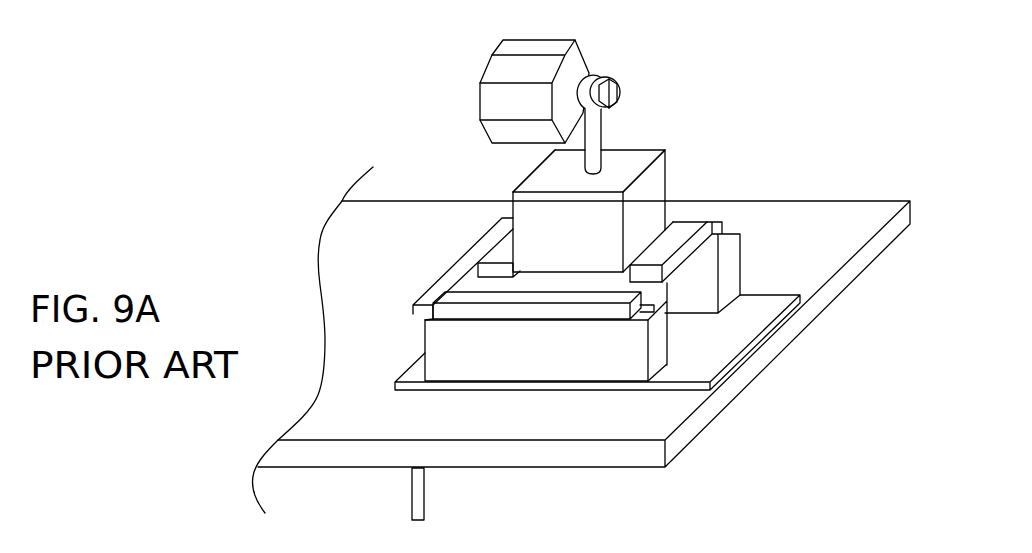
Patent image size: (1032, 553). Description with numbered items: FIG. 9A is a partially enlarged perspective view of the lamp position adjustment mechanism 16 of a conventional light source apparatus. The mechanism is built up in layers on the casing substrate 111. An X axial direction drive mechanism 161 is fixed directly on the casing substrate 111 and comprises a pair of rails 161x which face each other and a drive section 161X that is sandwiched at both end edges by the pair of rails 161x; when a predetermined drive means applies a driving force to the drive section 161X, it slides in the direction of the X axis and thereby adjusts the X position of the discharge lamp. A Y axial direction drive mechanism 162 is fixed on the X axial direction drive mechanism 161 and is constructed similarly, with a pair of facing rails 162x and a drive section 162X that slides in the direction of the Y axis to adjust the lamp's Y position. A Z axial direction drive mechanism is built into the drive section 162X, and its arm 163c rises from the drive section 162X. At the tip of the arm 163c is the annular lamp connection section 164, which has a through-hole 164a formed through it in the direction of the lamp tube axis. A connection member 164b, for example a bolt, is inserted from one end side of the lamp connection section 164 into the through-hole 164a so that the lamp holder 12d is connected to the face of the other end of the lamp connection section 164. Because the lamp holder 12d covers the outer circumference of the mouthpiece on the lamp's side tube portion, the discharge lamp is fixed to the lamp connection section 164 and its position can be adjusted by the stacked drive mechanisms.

The casing substrate 111 is at (369, 457).
The X axial direction drive mechanism 161 is at (418, 289).
The rails 161x is at (437, 316).
The drive section 161X is at (459, 262).
The Y axial direction drive mechanism 162 is at (658, 210).
The rails 162x is at (694, 247).
The drive section 162X is at (655, 190).
The lamp position adjustment mechanism 16 is at (674, 152).
The lamp holder 12d is at (492, 102).
The arm 163c is at (593, 133).
The lamp connection section 164 is at (592, 74).
The through-hole 164a is at (607, 79).
The connection member 164b is at (614, 92).